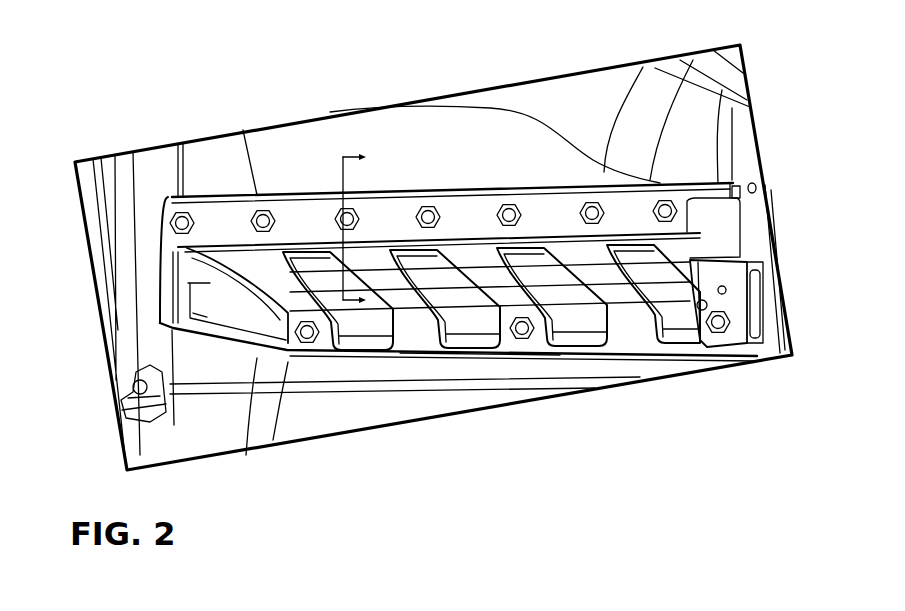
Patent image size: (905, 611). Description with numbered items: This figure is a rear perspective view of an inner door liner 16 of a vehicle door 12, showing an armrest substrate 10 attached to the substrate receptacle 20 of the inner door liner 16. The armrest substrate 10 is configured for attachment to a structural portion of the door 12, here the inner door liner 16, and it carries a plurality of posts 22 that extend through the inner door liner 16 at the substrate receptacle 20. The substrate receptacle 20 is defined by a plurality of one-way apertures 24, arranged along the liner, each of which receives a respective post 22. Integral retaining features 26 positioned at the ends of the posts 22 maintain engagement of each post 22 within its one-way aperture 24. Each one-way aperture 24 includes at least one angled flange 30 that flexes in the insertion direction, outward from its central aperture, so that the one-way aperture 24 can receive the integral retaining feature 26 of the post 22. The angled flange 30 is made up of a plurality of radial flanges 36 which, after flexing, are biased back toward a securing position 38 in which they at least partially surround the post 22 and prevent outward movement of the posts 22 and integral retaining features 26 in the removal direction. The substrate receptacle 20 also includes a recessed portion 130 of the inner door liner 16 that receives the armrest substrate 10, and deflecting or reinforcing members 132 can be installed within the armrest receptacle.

The armrest substrate 10 is at (580, 338).
The door 12 is at (651, 53).
The inner door liner 16 is at (227, 197).
The substrate receptacle 20 is at (485, 361).
The posts 22 is at (668, 193).
The one-way apertures 24 is at (435, 192).
The integral retaining features 26 is at (170, 223).
The angled flange 30 is at (309, 345).
The radial flanges 36 is at (727, 335).
The securing position 38 is at (245, 231).
The recessed portion 130 is at (287, 186).
The reinforcing members 132 is at (618, 284).